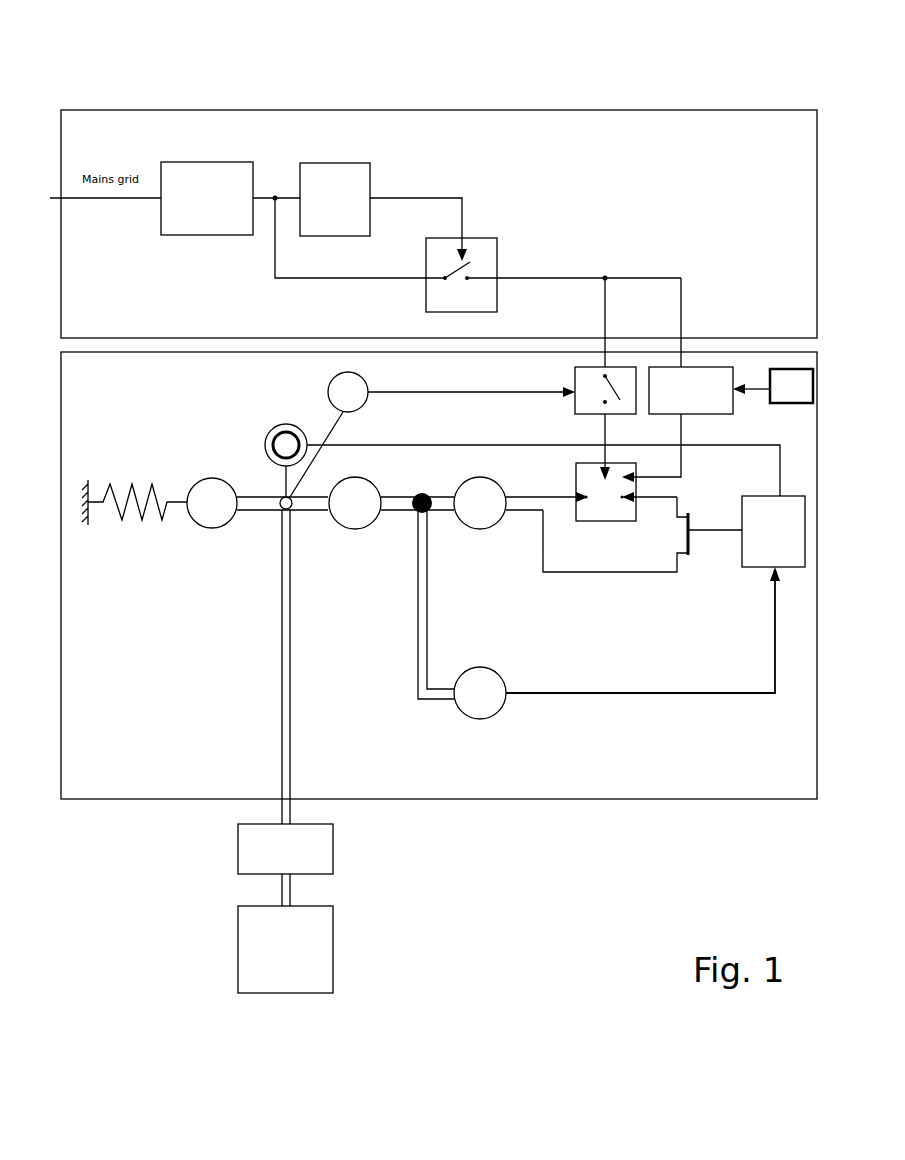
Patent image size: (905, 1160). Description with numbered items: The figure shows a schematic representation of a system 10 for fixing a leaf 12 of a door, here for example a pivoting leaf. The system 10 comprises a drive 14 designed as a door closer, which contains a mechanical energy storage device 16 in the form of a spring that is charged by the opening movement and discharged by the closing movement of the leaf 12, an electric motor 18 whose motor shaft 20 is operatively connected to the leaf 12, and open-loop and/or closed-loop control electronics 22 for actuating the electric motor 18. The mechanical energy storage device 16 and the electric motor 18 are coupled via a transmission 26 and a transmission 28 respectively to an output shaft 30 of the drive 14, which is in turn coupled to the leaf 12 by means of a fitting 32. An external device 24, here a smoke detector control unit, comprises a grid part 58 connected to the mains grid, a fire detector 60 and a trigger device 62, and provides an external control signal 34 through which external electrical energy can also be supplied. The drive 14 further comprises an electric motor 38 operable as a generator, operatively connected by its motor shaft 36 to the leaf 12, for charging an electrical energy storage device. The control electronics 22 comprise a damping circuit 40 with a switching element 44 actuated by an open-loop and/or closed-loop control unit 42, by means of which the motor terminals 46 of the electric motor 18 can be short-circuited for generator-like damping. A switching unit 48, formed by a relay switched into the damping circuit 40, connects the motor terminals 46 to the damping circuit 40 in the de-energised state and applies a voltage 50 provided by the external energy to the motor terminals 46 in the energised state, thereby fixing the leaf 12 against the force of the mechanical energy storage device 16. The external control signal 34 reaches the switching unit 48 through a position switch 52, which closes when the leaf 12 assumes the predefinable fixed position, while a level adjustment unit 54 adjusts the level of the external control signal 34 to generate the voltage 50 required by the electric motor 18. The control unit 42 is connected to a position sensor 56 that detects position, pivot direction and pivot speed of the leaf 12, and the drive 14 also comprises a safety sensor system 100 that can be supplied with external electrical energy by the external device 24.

The system 10 is at (470, 76).
The leaf 12 is at (274, 960).
The drive 14 is at (772, 351).
The mechanical energy storage device 16 is at (134, 512).
The electric motor 18 is at (484, 513).
The motor shaft 20 is at (447, 513).
The open-loop and/or closed-loop control electronics 22 is at (741, 366).
The external device 24 is at (770, 108).
The transmission 26 is at (214, 515).
The transmission 28 is at (362, 513).
The output shaft 30 is at (280, 693).
The fitting 32 is at (274, 859).
The external control signal 34 is at (680, 311).
The motor shaft 36 is at (440, 701).
The electric motor 38 is at (482, 701).
The damping circuit 40 is at (640, 573).
The open-loop and/or closed-loop control unit 42 is at (763, 540).
The switching element 44 is at (690, 556).
The motor terminals 46 is at (534, 513).
The switching unit 48 is at (605, 517).
The voltage 50 is at (683, 462).
The position switch 52 is at (573, 380).
The level adjustment unit 54 is at (680, 400).
The position sensor 56 is at (267, 443).
The grid part 58 is at (196, 208).
The fire detector 60 is at (324, 208).
The trigger device 62 is at (478, 252).
The safety sensor system 100 is at (773, 386).